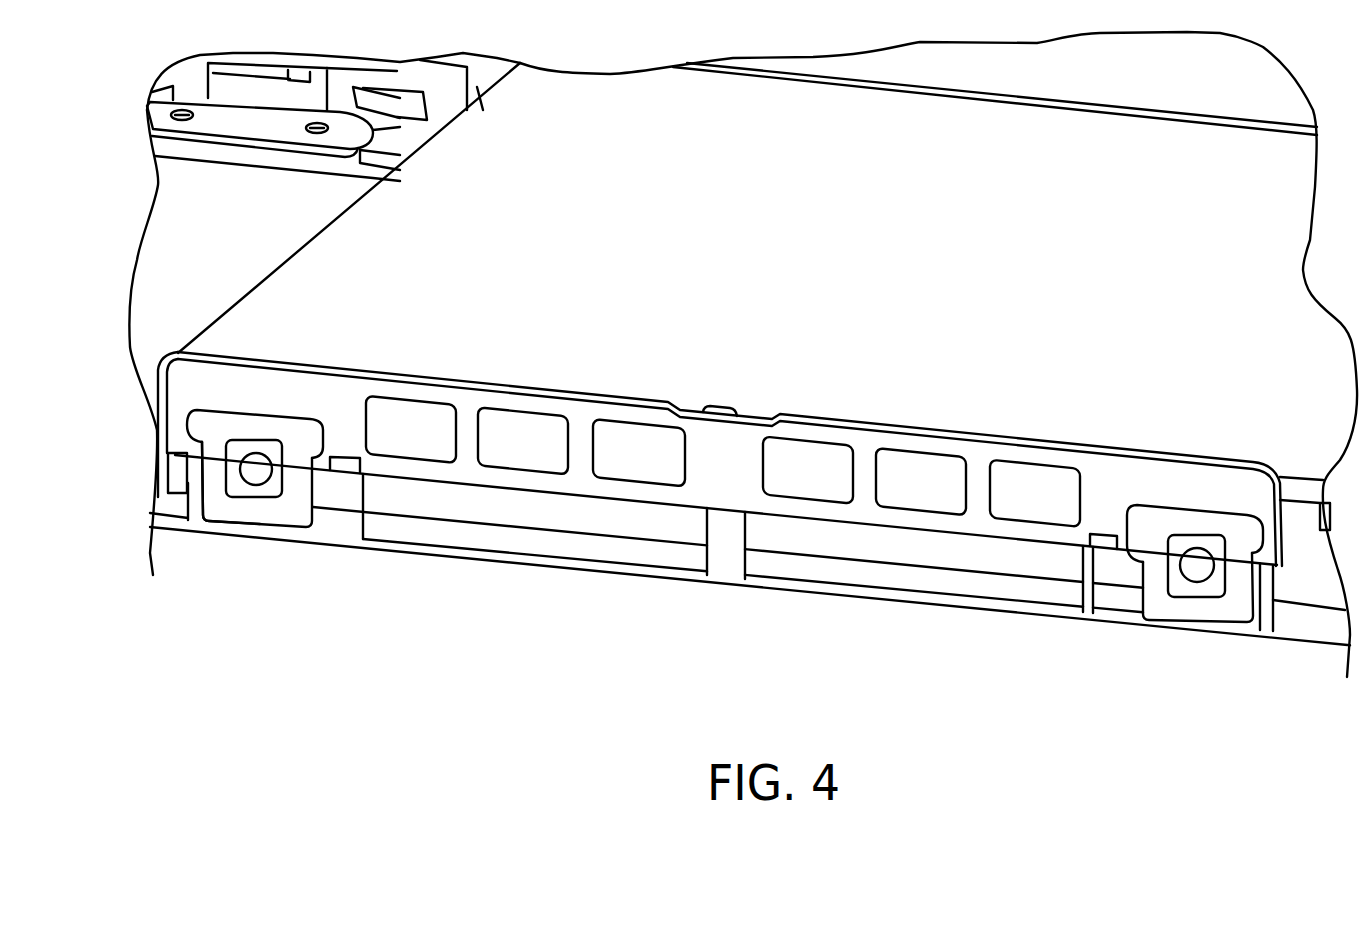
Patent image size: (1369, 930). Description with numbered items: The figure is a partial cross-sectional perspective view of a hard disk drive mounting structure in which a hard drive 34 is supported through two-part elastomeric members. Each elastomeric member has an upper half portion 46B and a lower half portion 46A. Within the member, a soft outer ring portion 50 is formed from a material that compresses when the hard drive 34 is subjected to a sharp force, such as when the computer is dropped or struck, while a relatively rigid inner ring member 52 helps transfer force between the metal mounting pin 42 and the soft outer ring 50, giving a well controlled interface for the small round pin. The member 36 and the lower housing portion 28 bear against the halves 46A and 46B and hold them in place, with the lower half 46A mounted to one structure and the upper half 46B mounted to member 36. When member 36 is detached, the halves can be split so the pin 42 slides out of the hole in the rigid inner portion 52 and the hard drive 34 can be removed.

The lower housing portion 28 is at (920, 597).
The hard drive 34 is at (330, 242).
The member 36 is at (540, 472).
The pin 42 is at (257, 482).
The lower half portion 46A is at (317, 507).
The upper half portion 46B is at (210, 420).
The outer ring portion 50 is at (218, 510).
The inner ring member 52 is at (232, 444).